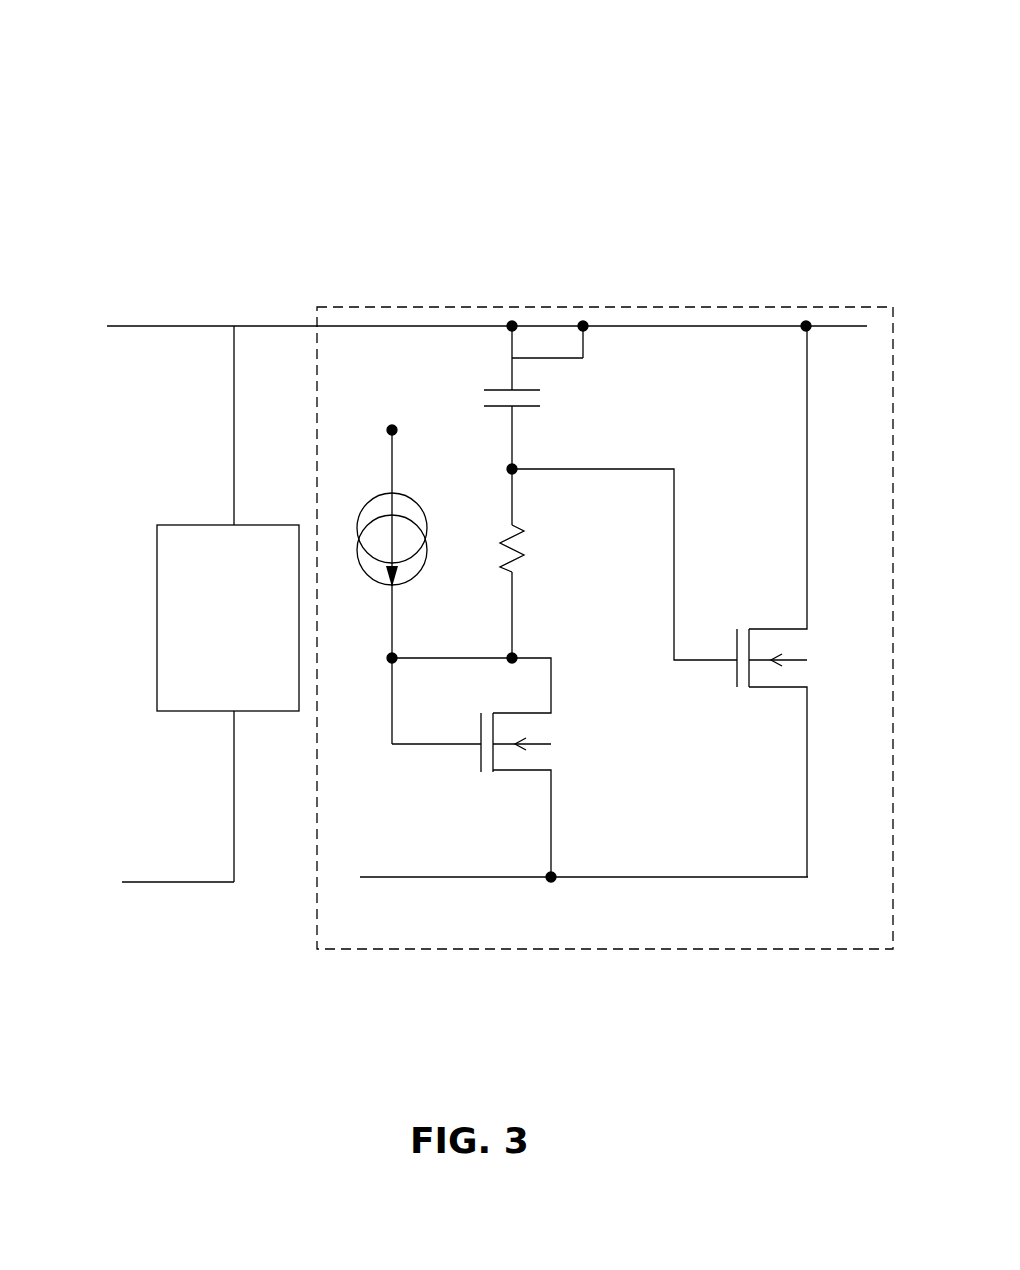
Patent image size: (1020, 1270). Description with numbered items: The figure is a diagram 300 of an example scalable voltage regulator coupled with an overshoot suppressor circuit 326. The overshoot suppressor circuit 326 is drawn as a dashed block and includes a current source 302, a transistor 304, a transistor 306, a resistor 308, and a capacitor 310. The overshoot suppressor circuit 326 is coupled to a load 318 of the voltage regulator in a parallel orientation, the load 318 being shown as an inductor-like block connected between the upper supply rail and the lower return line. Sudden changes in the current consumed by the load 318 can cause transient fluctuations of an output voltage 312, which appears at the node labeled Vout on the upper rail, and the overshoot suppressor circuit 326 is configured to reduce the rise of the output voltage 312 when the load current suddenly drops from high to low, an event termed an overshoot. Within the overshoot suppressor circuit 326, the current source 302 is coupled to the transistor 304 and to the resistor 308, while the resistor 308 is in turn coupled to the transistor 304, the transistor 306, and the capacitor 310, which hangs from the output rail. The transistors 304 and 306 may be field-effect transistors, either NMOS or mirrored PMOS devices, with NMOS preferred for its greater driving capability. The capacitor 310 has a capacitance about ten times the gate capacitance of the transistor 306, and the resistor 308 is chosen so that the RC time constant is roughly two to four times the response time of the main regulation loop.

The diagram 300 is at (737, 42).
The current source 302 is at (363, 482).
The transistor 304 is at (527, 706).
The transistor 306 is at (804, 650).
The resistor 308 is at (535, 568).
The capacitor 310 is at (463, 378).
The output voltage 312 is at (809, 270).
The load 318 is at (193, 512).
The overshoot suppressor circuit 326 is at (322, 290).